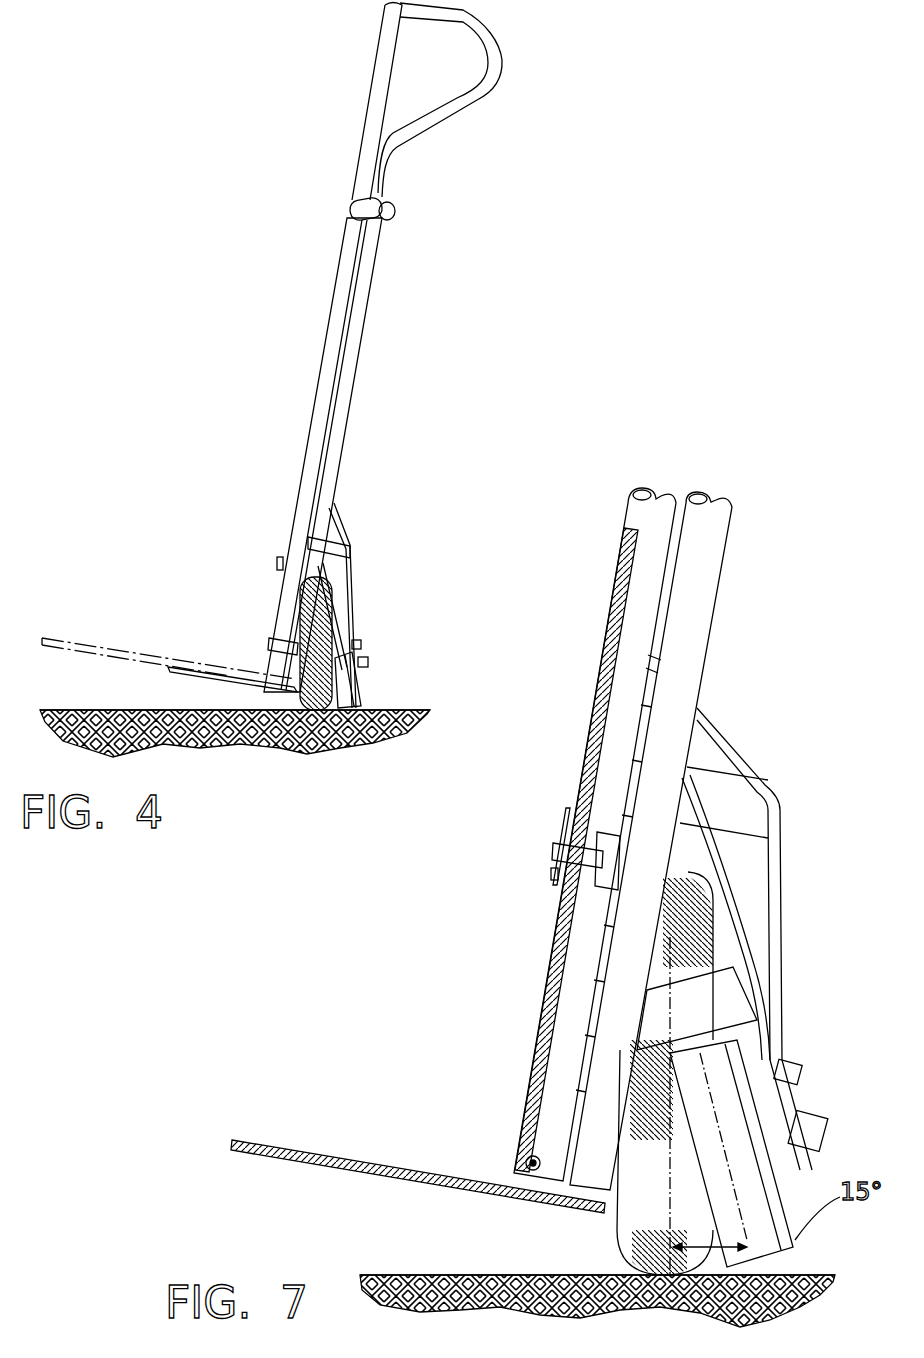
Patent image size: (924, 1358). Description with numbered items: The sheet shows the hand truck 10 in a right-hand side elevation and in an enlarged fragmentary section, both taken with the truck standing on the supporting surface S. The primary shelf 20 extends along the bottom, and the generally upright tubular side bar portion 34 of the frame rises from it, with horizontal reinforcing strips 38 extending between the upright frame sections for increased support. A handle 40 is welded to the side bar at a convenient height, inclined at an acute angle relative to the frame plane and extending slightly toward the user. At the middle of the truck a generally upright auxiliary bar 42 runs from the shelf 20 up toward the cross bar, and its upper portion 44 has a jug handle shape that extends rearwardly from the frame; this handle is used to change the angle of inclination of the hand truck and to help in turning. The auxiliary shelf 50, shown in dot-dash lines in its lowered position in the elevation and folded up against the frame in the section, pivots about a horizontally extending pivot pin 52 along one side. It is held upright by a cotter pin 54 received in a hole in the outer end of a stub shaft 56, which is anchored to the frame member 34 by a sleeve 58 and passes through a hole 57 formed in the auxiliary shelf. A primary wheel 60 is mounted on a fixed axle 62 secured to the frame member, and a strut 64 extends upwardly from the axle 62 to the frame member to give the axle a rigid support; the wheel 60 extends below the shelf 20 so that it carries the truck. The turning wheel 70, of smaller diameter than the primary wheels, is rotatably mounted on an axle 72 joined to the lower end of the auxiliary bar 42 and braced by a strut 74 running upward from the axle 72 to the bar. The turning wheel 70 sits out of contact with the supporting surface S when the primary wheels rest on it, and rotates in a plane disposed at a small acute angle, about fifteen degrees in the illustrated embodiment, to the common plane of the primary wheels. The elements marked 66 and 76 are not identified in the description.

In FIG. 4, the hand truck 10 is at (290, 200).
In FIG. 7, the hand truck 10 is at (488, 999).
In FIG. 4, the primary shelf 20 is at (193, 675).
In FIG. 7, the primary shelf 20 is at (345, 1185).
In FIG. 4, the side bar portion 34 is at (310, 442).
In FIG. 7, the side bar portion 34 is at (628, 510).
In FIG. 4, the reinforcing strip 38 is at (335, 397).
In FIG. 7, the reinforcing strip 38 is at (668, 862).
In FIG. 4, the handle 40 is at (398, 207).
In FIG. 4, the auxiliary bar 42 is at (352, 338).
In FIG. 7, the auxiliary bar 42 is at (733, 540).
In FIG. 4, the upper portion of jug handle shape 44 is at (485, 115).
In FIG. 4, the auxiliary shelf 50 is at (152, 657).
In FIG. 7, the auxiliary shelf 50 is at (525, 1097).
In FIG. 7, the pivot pin 52 is at (532, 1173).
In FIG. 4, the cotter pin 54 is at (280, 558).
In FIG. 7, the cotter pin 54 is at (565, 820).
In FIG. 7, the stub shaft 56 is at (553, 852).
In FIG. 7, the hole 57 is at (552, 870).
In FIG. 7, the sleeve 58 is at (597, 905).
In FIG. 4, the primary wheel 60 is at (322, 617).
In FIG. 7, the primary wheel 60 is at (700, 880).
In FIG. 4, the axle 62 is at (358, 645).
In FIG. 7, the axle 62 is at (802, 1075).
In FIG. 4, the strut 64 is at (353, 565).
In FIG. 7, the strut 64 is at (742, 755).
In FIG. 4, the frame member 66 is at (340, 512).
In FIG. 7, the frame member 66 is at (735, 820).
In FIG. 4, the turning wheel 70 is at (357, 700).
In FIG. 7, the turning wheel 70 is at (793, 1230).
In FIG. 4, the axle 72 is at (368, 662).
In FIG. 7, the axle 72 is at (828, 1133).
In FIG. 4, the strut 74 is at (342, 588).
In FIG. 7, the strut 74 is at (742, 932).
In FIG. 7, the brace 76 is at (730, 1000).
In FIG. 4, the supporting surface S is at (88, 710).
In FIG. 7, the supporting surface S is at (470, 1275).